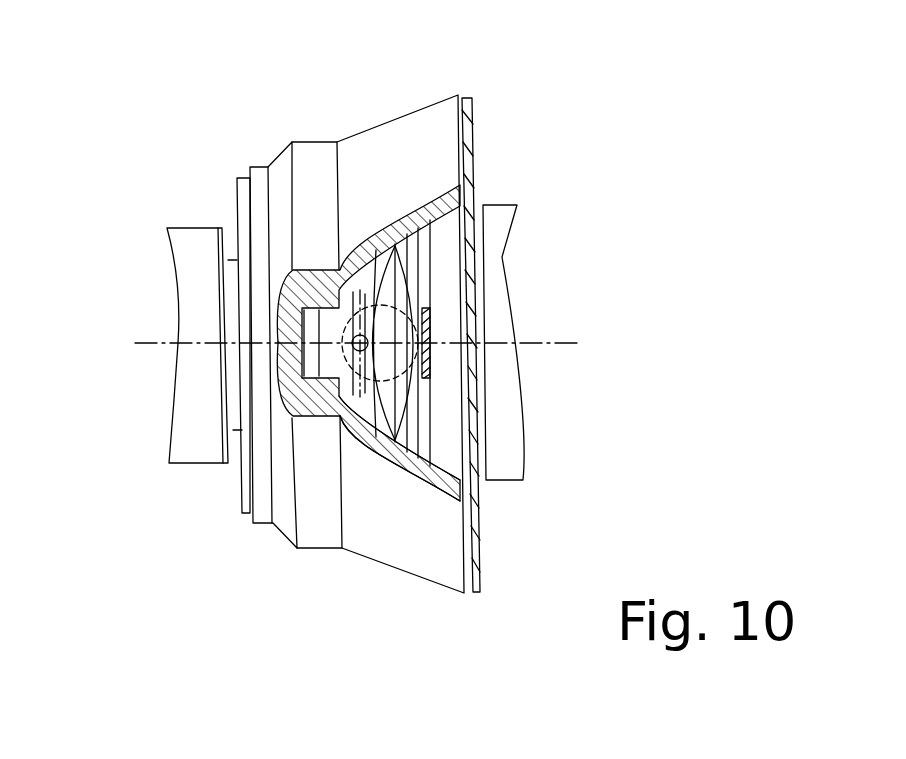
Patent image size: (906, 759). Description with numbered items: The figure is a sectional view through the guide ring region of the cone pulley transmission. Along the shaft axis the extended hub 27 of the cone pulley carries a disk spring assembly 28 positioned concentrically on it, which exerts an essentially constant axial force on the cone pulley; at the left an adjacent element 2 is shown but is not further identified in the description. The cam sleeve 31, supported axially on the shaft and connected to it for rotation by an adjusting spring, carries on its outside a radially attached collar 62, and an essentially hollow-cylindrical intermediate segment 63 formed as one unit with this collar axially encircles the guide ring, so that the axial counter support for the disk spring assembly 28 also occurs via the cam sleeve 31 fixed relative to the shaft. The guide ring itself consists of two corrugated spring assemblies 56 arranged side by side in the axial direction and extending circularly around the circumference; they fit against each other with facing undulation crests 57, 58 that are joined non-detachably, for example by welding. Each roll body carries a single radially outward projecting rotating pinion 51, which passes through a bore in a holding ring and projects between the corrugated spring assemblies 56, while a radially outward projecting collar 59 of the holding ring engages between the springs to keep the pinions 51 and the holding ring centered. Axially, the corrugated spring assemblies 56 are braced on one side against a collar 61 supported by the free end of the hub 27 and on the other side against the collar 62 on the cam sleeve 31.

The camera body 2 is at (195, 252).
The cam sleeve 31 is at (240, 198).
The collar 62 is at (275, 177).
The intermediate segment 63 is at (365, 145).
The disk spring assembly 28 is at (463, 130).
The extended hub 27 is at (492, 215).
The corrugated spring assemblies 56 is at (347, 350).
The undulation crest 57 is at (393, 424).
The undulation crest 58 is at (405, 428).
The collar 59 is at (367, 400).
The collar 61 is at (430, 322).
The rotating pinion 51 is at (365, 345).